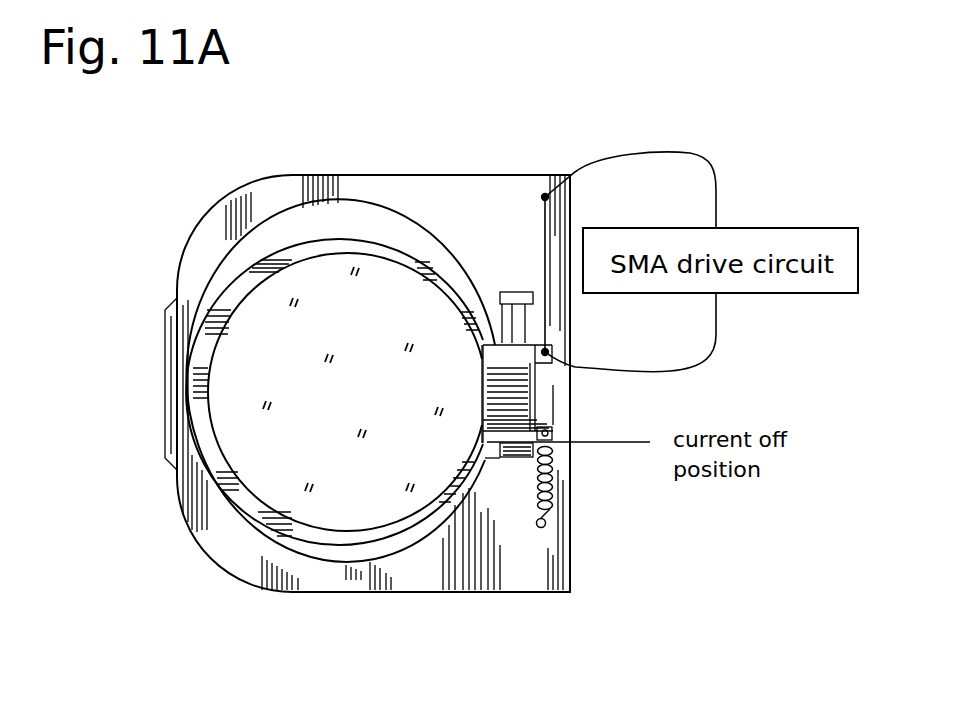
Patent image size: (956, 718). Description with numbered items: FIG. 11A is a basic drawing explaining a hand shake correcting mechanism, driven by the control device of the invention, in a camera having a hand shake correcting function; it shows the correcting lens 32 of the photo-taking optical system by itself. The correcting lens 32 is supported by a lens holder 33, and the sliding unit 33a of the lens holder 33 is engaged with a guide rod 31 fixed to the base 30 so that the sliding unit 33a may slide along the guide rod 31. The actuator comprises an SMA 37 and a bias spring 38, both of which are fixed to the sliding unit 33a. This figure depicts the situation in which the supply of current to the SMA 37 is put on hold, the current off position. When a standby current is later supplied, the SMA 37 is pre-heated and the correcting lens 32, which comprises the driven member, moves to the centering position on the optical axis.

The base 30 is at (260, 203).
The guide rod 31 is at (517, 297).
The correcting lens 32 is at (238, 425).
The lens holder 33 is at (350, 238).
The sliding unit 33a is at (517, 383).
The SMA 37 is at (542, 232).
The bias spring 38 is at (553, 503).